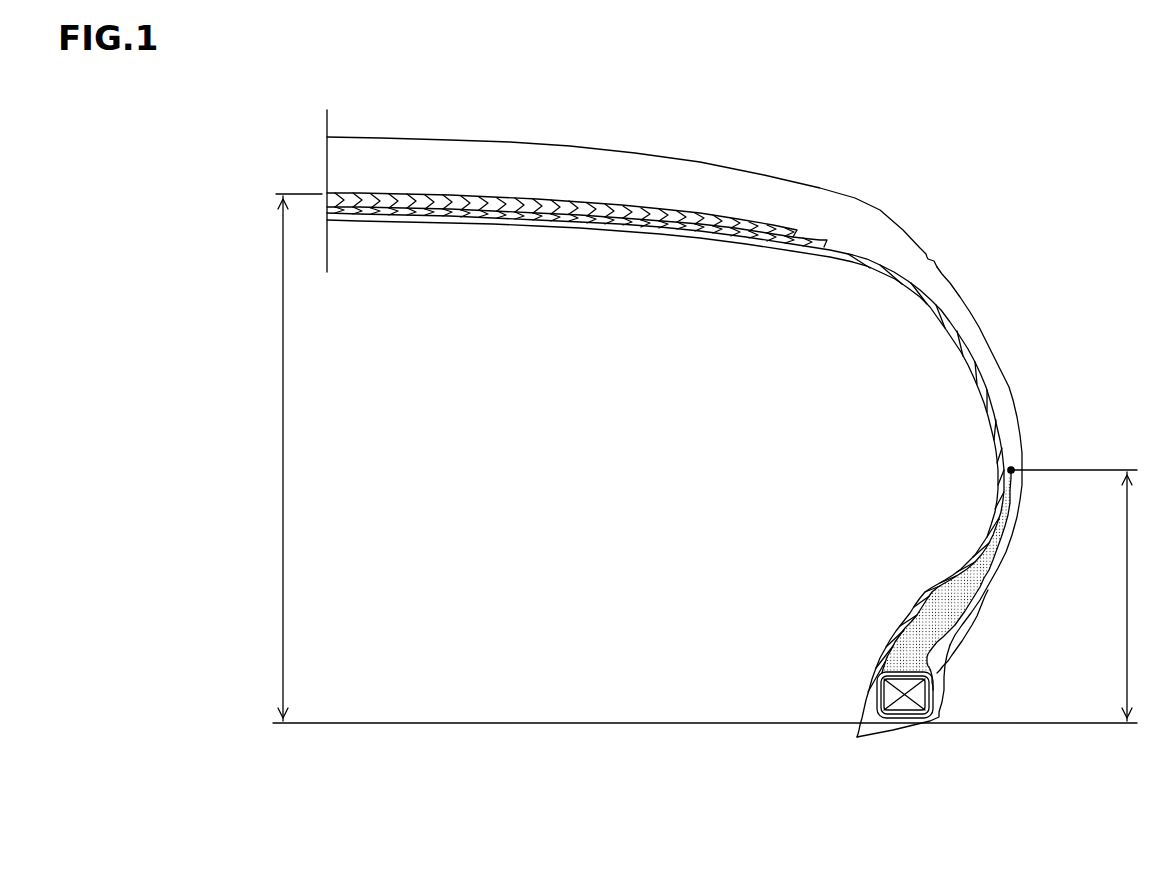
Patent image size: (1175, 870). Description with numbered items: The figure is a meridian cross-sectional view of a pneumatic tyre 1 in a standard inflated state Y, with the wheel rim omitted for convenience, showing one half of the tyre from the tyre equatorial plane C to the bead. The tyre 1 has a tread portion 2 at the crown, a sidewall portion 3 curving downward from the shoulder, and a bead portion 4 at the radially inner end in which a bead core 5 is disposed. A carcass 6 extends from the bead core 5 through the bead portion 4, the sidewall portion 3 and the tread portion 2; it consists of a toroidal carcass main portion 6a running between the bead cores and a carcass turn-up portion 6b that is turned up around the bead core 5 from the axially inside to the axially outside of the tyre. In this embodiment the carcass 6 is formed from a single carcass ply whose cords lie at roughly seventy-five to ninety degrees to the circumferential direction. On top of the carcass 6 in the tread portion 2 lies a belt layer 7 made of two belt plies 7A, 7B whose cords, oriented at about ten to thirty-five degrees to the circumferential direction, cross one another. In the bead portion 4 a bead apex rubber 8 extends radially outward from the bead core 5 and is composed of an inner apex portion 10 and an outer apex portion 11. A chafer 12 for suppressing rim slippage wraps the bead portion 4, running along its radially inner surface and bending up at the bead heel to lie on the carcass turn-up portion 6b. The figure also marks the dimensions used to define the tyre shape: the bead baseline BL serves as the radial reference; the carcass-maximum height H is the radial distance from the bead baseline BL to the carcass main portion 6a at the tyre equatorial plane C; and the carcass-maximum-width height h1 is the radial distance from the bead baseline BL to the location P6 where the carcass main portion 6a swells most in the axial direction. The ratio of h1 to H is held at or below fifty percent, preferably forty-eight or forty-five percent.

The pneumatic tyre 1 is at (882, 192).
The tread portion 2 is at (566, 168).
The sidewall portion 3 is at (1070, 385).
The bead portion 4 is at (845, 673).
The bead core 5 is at (903, 704).
The carcass 6 is at (800, 548).
The carcass main portion 6a is at (883, 653).
The carcass turn-up portion 6b is at (900, 622).
The belt layer 7 is at (750, 92).
The belt ply 7A is at (748, 230).
The belt ply 7B is at (622, 207).
The bead apex rubber 8 is at (1060, 560).
The inner apex portion 10 is at (930, 660).
The outer apex portion 11 is at (950, 603).
The chafer 12 is at (935, 692).
The location of axial maximum width of the carcass main portion P6 is at (1011, 470).
The standard inflated state Y is at (842, 153).
The tyre equatorial plane C is at (323, 177).
The carcass-maximum height H is at (288, 457).
The carcass-maximum-width height h1 is at (1085, 595).
The bead baseline BL is at (572, 723).